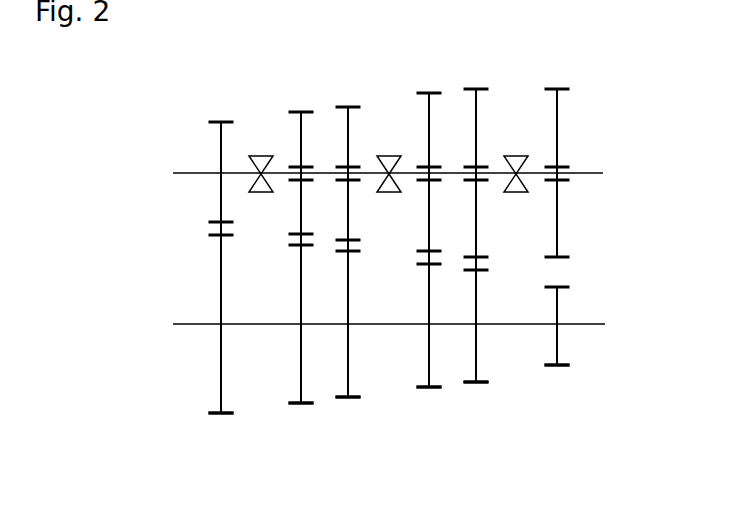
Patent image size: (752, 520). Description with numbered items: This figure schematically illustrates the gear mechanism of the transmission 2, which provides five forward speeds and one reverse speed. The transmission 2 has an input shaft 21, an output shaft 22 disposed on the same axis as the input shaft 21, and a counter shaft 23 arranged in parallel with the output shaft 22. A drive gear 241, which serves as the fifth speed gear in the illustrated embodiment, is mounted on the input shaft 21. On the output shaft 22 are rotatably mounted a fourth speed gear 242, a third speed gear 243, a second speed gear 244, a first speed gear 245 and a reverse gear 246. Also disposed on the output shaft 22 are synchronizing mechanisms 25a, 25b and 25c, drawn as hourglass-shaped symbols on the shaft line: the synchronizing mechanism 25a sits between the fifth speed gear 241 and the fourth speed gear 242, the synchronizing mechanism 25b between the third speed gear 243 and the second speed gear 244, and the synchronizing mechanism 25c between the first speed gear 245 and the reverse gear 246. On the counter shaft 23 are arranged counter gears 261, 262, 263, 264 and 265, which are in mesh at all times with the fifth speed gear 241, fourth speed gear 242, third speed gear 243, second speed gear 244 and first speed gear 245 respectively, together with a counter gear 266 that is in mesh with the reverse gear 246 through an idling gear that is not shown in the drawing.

The transmission 2 is at (145, 242).
The input shaft 21 is at (192, 172).
The output shaft 22 is at (595, 173).
The counter shaft 23 is at (192, 327).
The drive gear 241 is at (213, 120).
The fourth speed gear 242 is at (298, 110).
The third speed gear 243 is at (357, 105).
The second speed gear 244 is at (425, 92).
The first speed gear 245 is at (473, 85).
The reverse gear 246 is at (562, 87).
The synchronizing mechanism 25a is at (262, 153).
The synchronizing mechanism 25b is at (390, 153).
The synchronizing mechanism 25c is at (518, 155).
The counter gear 261 is at (210, 417).
The counter gear 262 is at (293, 407).
The counter gear 263 is at (355, 400).
The counter gear 264 is at (436, 389).
The counter gear 265 is at (483, 385).
The counter gear 266 is at (560, 370).